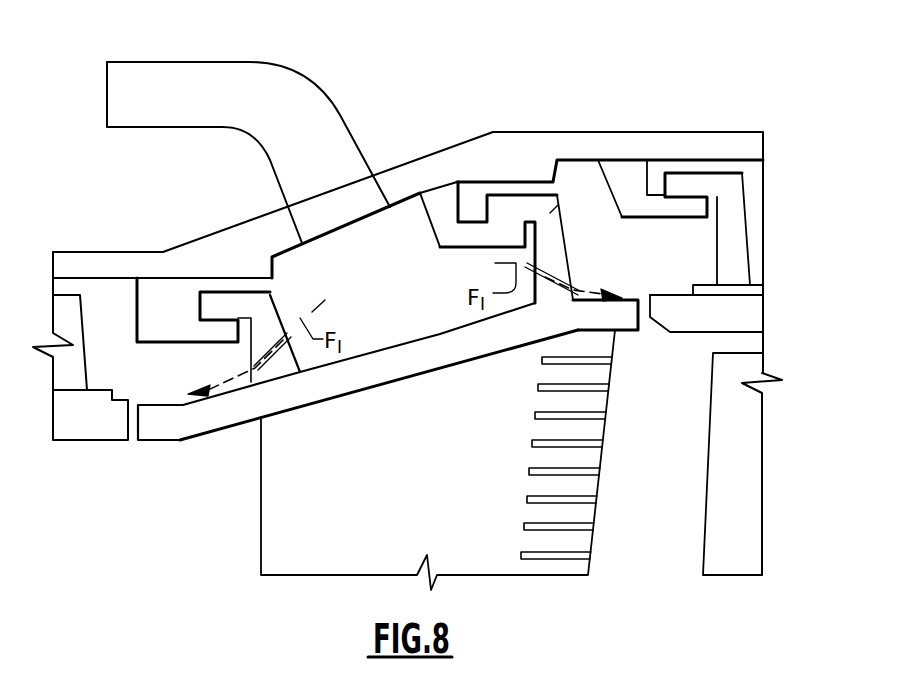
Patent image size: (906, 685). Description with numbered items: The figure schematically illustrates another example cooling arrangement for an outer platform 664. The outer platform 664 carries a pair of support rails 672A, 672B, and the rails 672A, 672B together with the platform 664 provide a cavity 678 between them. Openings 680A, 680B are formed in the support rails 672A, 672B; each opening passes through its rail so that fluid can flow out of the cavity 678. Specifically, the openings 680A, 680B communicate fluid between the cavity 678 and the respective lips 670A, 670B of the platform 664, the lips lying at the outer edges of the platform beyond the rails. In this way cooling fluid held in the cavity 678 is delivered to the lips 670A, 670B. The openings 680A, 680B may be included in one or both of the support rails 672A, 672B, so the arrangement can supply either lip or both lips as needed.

The outer platform 664 is at (431, 352).
The lip 670A is at (165, 421).
The lip 670B is at (627, 320).
The support rail 672A is at (259, 303).
The support rail 672B is at (548, 215).
The cavity 678 is at (436, 287).
The opening 680A is at (288, 335).
The opening 680B is at (560, 270).